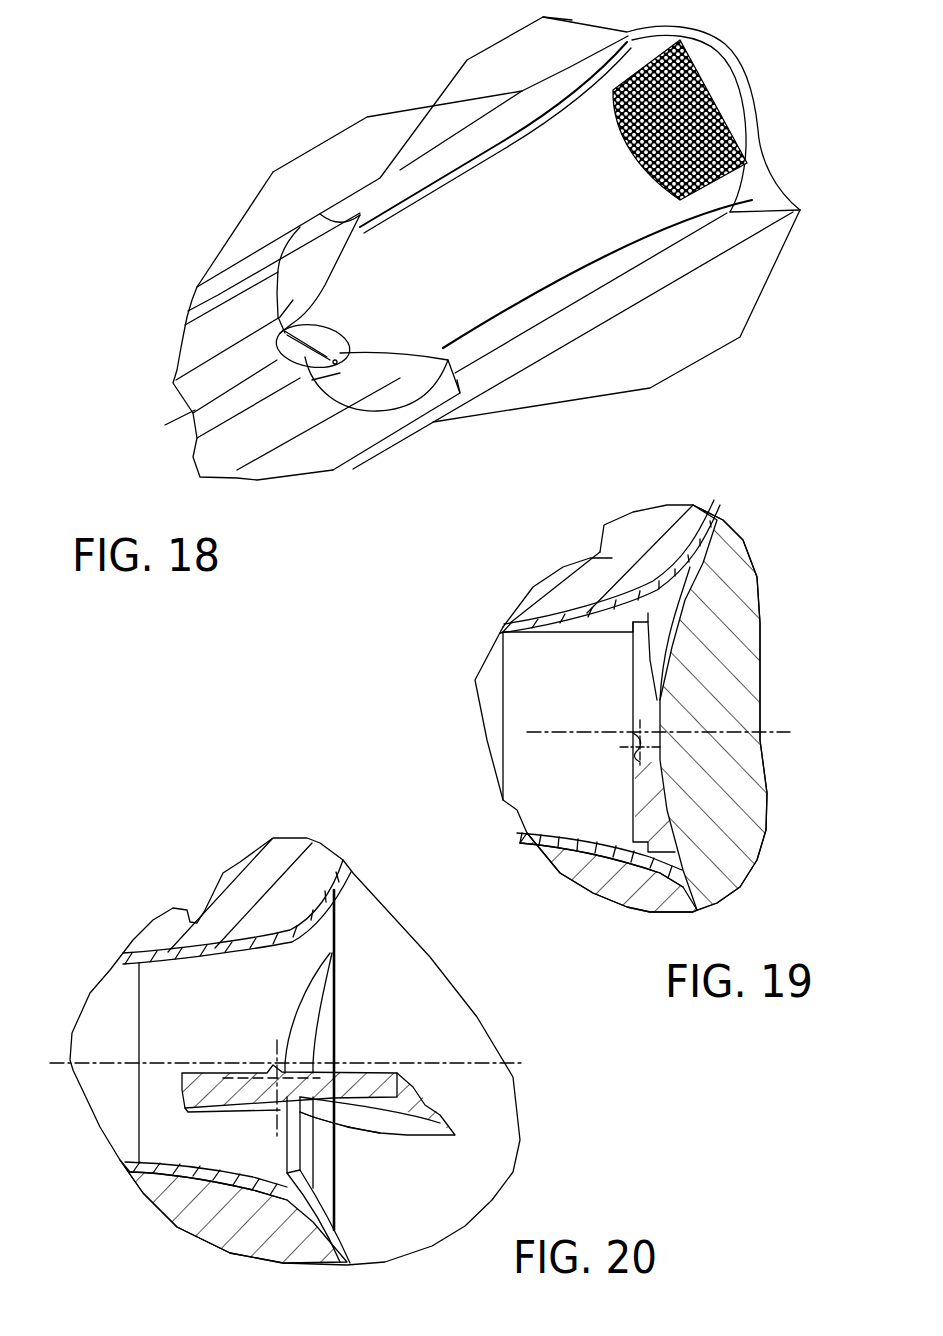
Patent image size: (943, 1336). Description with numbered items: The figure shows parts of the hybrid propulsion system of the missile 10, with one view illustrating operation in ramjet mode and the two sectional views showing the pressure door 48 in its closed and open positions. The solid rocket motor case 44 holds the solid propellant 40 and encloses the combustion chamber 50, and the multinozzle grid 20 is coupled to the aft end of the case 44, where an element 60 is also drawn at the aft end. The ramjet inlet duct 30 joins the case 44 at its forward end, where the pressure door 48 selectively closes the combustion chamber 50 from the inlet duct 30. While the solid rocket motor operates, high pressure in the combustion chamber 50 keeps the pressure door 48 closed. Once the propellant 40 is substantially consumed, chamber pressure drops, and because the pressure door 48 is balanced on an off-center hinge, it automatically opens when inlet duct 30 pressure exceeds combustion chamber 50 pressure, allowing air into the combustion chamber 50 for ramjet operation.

In FIG. 18, the missile 10 is at (199, 170).
In FIG. 18, the multinozzle grid 20 is at (752, 85).
In FIG. 18, the mesh screen 60 is at (740, 130).
In FIG. 18, the solid rocket motor case 44 is at (521, 100).
In FIG. 19, the solid rocket motor case 44 is at (710, 528).
In FIG. 20, the solid rocket motor case 44 is at (345, 862).
In FIG. 18, the combustion chamber 50 is at (440, 205).
In FIG. 19, the combustion chamber 50 is at (767, 544).
In FIG. 20, the combustion chamber 50 is at (466, 1167).
In FIG. 19, the solid propellant 40 is at (743, 605).
In FIG. 18, the inlet duct 30 is at (180, 418).
In FIG. 19, the inlet duct 30 is at (517, 787).
In FIG. 20, the inlet duct 30 is at (153, 1010).
In FIG. 18, the pressure door 48 is at (293, 357).
In FIG. 19, the pressure door 48 is at (650, 813).
In FIG. 20, the pressure door 48 is at (413, 1103).